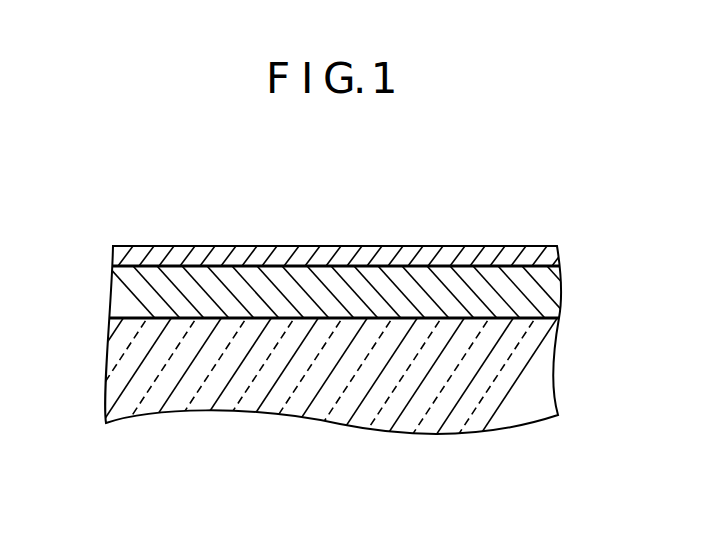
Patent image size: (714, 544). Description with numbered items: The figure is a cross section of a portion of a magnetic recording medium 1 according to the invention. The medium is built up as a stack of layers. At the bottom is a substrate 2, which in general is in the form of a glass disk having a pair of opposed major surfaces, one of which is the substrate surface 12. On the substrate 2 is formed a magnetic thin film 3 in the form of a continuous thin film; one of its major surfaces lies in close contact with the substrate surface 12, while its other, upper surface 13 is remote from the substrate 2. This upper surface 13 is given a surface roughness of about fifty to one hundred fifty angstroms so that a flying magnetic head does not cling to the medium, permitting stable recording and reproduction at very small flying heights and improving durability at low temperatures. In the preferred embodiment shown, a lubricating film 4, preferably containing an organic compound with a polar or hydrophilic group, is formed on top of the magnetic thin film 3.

The magnetic recording medium 1 is at (407, 192).
The substrate 2 is at (343, 408).
The magnetic thin film 3 is at (548, 290).
The lubricating film 4 is at (468, 253).
The substrate surface 12 is at (120, 319).
The upper surface of the magnetic thin film 13 is at (126, 268).